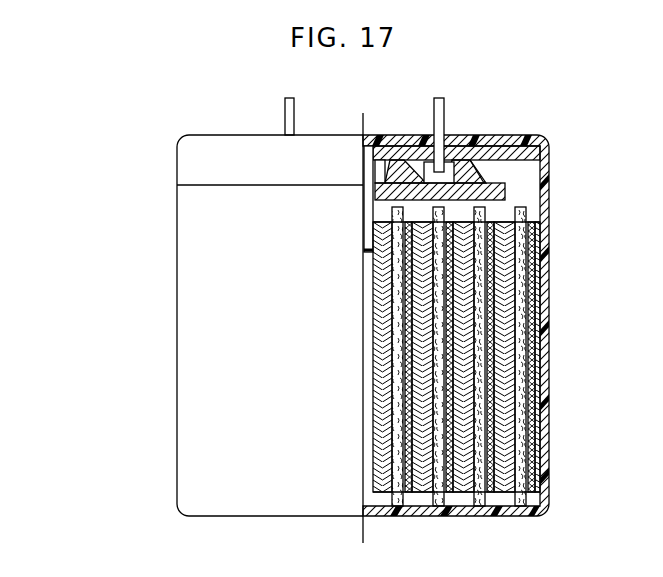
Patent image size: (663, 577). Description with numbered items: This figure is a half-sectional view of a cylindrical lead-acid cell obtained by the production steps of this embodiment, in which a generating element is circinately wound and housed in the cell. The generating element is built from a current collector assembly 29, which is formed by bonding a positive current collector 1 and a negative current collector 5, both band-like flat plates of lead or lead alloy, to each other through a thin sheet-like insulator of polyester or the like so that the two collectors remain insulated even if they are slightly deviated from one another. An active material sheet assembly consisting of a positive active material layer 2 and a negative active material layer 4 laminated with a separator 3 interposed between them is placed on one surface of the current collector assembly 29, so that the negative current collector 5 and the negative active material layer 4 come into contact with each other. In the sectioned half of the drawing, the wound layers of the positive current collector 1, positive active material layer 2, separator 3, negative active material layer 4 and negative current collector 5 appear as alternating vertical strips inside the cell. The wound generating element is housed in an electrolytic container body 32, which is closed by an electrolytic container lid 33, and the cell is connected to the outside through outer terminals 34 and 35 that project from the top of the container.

The positive current collector 1 is at (383, 445).
The positive active material layer 2 is at (412, 208).
The separator 3 is at (513, 219).
The negative active material layer 4 is at (392, 222).
The negative current collector 5 is at (522, 302).
The current collector assembly 29 is at (404, 172).
The electrolytic container body 32 is at (190, 318).
The electrolytic container lid 33 is at (193, 170).
The outer terminal 34 is at (445, 108).
The outer terminal 35 is at (287, 108).